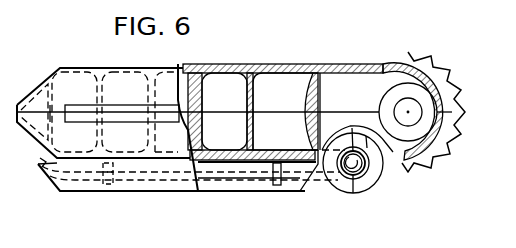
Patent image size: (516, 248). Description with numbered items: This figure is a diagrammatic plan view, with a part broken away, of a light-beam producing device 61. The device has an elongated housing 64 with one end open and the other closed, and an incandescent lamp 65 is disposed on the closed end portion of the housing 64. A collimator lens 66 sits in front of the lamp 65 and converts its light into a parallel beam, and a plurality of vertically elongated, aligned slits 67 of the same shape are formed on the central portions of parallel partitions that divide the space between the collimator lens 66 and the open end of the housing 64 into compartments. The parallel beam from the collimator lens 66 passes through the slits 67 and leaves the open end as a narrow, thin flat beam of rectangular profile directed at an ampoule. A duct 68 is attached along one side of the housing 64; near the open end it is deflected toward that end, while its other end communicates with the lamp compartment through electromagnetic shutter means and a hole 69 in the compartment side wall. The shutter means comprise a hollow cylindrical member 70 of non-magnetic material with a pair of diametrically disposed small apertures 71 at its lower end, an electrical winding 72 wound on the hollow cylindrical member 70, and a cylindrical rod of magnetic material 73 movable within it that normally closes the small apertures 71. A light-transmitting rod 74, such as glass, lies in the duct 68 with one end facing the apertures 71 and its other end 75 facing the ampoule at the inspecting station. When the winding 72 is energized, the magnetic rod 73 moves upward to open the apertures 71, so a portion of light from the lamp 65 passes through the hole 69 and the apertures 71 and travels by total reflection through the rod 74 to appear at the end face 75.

The light-beam producing device 61 is at (254, 35).
The elongated housing 64 is at (182, 67).
The incandescent lamp 65 is at (401, 103).
The collimator lens 66 is at (305, 108).
The vertically elongated slits 67 is at (250, 112).
The duct 68 is at (156, 188).
The hole 69 is at (366, 136).
The hollow cylindrical member 70 is at (352, 128).
The small apertures 71 is at (354, 176).
The electrical winding 72 is at (360, 176).
The cylindrical rod of magnetic material 73 is at (378, 174).
The light-transmitting rod 74 is at (223, 178).
The other end of the light-transmitting rod 75 is at (42, 163).